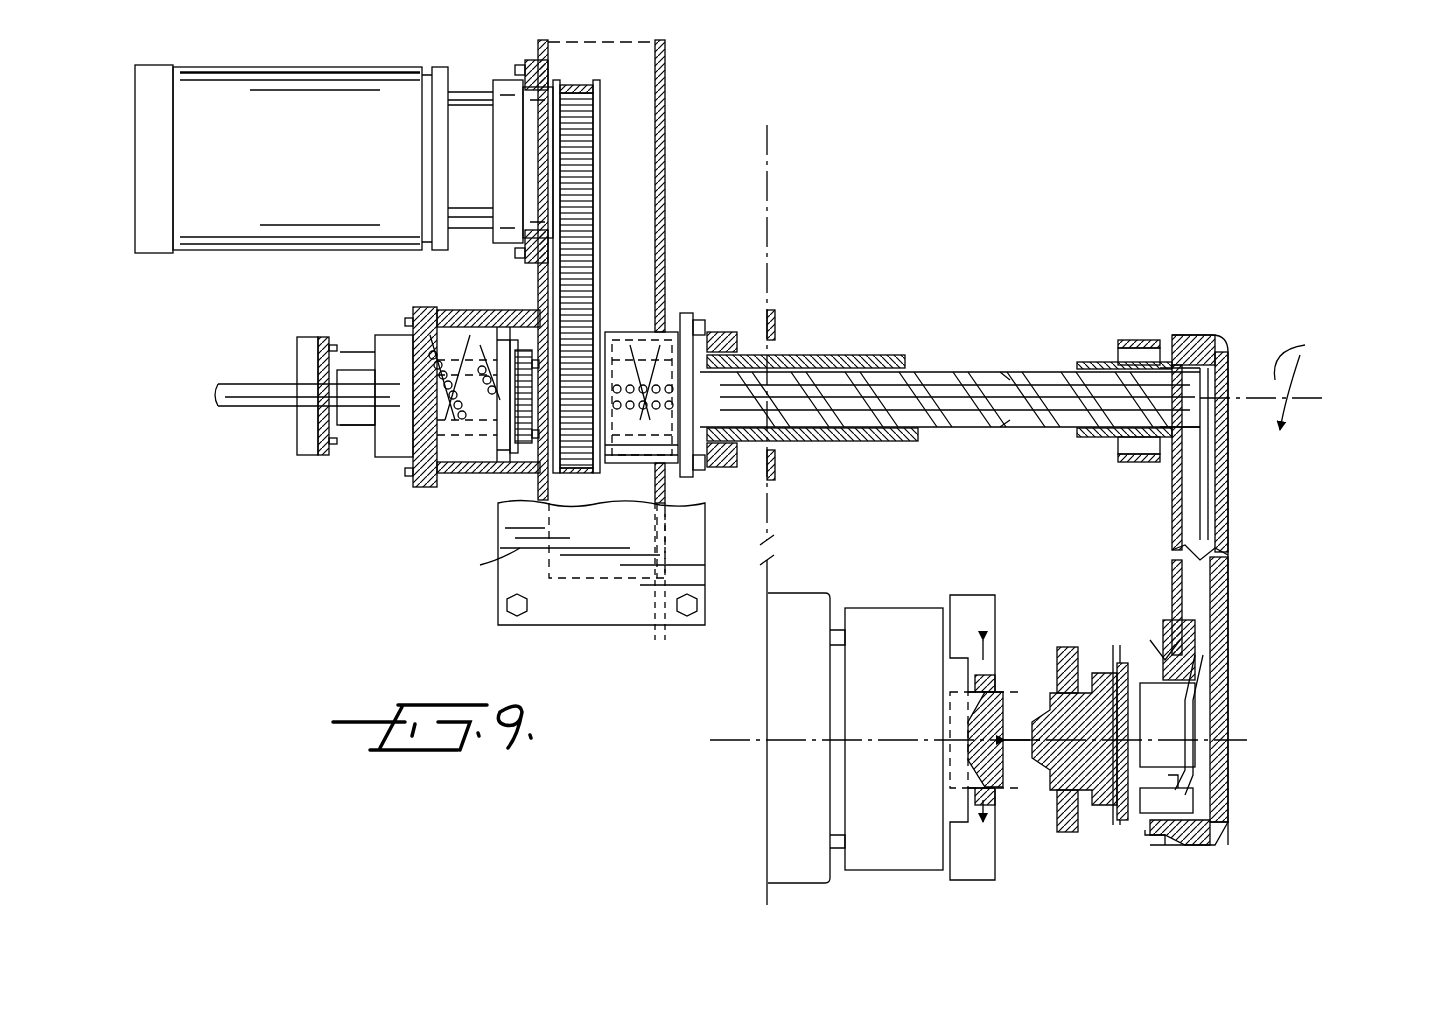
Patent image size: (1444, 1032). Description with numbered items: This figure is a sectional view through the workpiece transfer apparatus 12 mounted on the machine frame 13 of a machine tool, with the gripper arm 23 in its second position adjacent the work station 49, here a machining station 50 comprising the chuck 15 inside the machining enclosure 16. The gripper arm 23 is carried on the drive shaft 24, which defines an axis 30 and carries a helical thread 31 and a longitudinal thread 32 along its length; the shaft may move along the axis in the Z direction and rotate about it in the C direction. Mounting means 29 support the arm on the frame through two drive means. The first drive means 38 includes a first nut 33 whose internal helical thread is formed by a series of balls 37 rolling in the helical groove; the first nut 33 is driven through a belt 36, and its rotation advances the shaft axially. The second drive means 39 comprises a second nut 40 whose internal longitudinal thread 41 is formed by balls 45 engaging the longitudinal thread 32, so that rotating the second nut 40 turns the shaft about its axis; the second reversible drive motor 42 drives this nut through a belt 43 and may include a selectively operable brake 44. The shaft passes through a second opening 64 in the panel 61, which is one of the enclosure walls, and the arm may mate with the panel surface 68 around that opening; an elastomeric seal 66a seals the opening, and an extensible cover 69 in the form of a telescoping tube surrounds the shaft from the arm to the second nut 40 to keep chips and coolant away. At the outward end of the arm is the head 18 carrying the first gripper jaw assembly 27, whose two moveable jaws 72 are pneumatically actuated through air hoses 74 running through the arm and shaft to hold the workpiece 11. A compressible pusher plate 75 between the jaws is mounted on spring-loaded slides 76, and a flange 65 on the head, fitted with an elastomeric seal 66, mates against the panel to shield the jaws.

The second reversible drive motor 42 is at (325, 170).
The brake 44 is at (538, 145).
The belt 43 is at (580, 265).
The second nut 40 is at (678, 315).
The first drive means 38 is at (385, 458).
The air hoses 74 is at (248, 405).
The first nut 33 is at (440, 478).
The balls 37 is at (455, 330).
The belt 36 is at (520, 350).
The internal longitudinal thread 41 is at (640, 380).
The balls 45 is at (620, 458).
The second drive means 39 is at (690, 478).
The extensible cover 69 is at (870, 437).
The drive shaft 24 is at (353, 365).
The helical thread 31 is at (1010, 375).
The longitudinal thread 32 is at (1000, 410).
The elastomeric seal 66a is at (1142, 336).
The gripper arm 23 is at (1225, 580).
The panel 61 is at (770, 160).
The axis 30 is at (1315, 405).
The workpiece transfer apparatus 12 is at (1000, 262).
The mounting means 29 is at (748, 297).
The panel surface 68 is at (777, 318).
The second opening 64 is at (777, 343).
The machine frame 13 is at (470, 588).
The machining station 50 is at (900, 590).
The chuck 15 is at (985, 615).
The pusher plate 75 is at (1118, 650).
The workpiece 11 is at (1040, 700).
The moveable jaws 72 is at (1070, 645).
The work station 49 is at (1005, 832).
The head 18 is at (1222, 698).
The first gripper jaw assembly 27 is at (1133, 715).
The spring-loaded slides 76 is at (1182, 800).
The flange 65 is at (1200, 840).
The elastomeric seal 66 is at (1150, 840).
The machining enclosure 16 is at (995, 525).